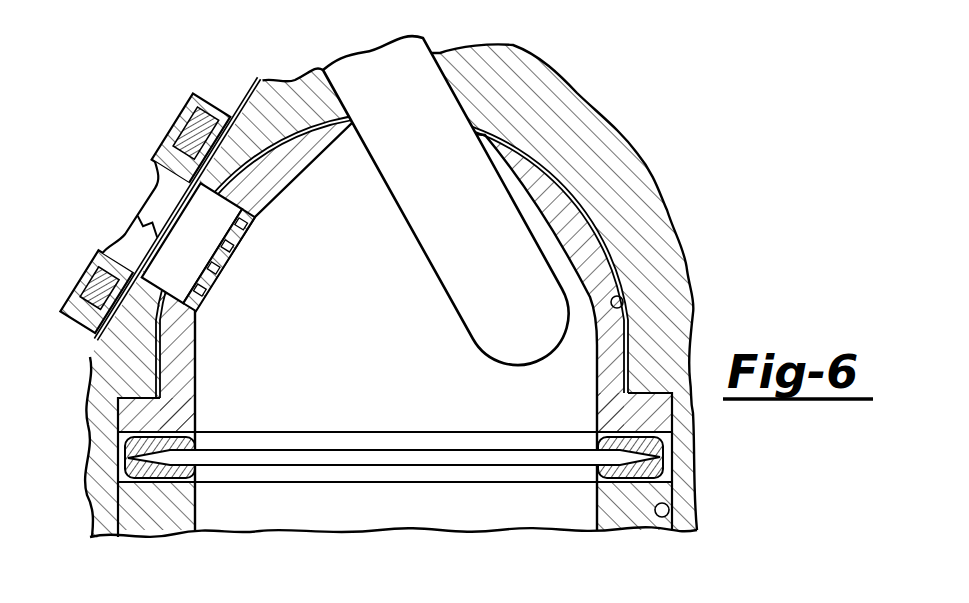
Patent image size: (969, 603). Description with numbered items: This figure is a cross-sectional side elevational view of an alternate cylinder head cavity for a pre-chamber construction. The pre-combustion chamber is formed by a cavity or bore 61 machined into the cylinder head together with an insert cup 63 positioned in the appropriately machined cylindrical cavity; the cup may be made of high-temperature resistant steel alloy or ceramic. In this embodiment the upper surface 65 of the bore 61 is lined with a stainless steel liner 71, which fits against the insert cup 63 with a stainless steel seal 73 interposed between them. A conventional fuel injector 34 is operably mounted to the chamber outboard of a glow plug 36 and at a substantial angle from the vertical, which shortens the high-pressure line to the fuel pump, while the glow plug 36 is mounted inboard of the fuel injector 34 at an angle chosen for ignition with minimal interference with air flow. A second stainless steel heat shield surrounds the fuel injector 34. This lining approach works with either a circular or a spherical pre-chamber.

The fuel injector 34 is at (175, 215).
The glow plug 36 is at (450, 147).
The cavity 61 is at (668, 526).
The insert cup 63 is at (627, 500).
The upper surface 65 is at (632, 312).
The stainless steel liner 71 is at (613, 372).
The stainless steel seal 73 is at (665, 452).